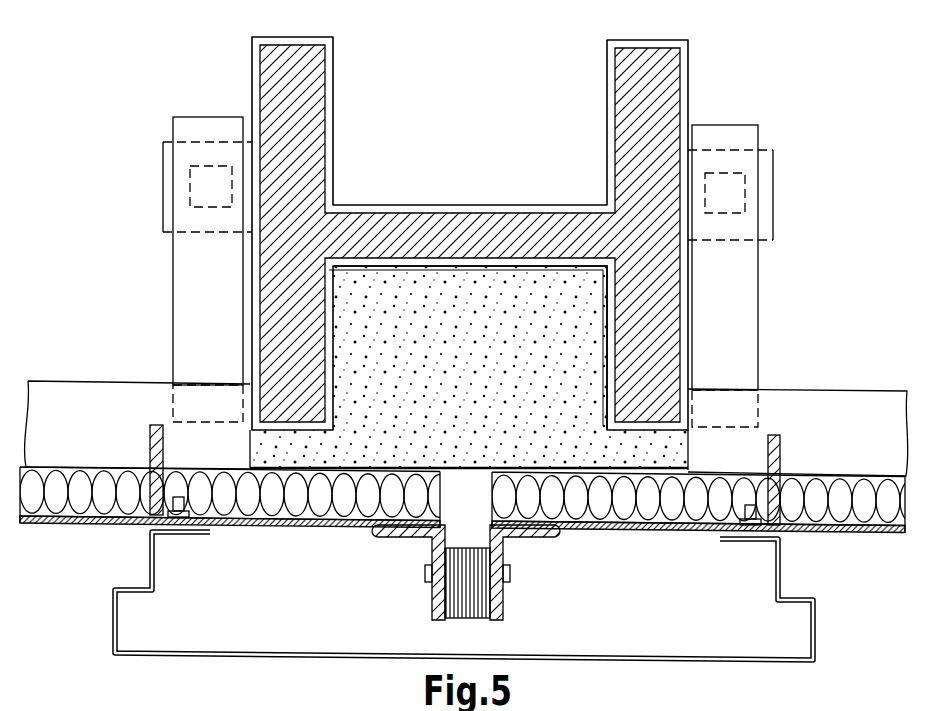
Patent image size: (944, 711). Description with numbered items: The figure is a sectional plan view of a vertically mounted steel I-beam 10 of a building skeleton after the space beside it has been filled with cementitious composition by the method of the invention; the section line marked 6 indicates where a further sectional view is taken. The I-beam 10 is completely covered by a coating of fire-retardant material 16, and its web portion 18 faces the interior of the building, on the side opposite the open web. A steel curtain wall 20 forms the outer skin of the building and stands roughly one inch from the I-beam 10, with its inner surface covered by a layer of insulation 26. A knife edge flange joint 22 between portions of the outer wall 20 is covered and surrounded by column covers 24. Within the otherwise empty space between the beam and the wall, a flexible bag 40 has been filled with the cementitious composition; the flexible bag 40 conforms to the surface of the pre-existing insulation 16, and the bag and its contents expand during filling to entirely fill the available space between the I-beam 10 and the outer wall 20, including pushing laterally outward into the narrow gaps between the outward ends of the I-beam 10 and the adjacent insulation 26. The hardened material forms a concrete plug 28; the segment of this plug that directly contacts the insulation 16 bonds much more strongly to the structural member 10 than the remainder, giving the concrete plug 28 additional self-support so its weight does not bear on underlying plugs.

The I-beam 10 is at (305, 57).
The coating of fire-retardant material 16 is at (607, 282).
The web portion 18 is at (480, 102).
The steel curtain wall 20 is at (78, 525).
The knife edge flange joint 22 is at (432, 603).
The column covers 24 is at (113, 626).
The layer of insulation 26 is at (272, 500).
The concrete plug 28 is at (600, 363).
The flexible bag 40 is at (609, 311).
The section line 6- 6 is at (125, 308).